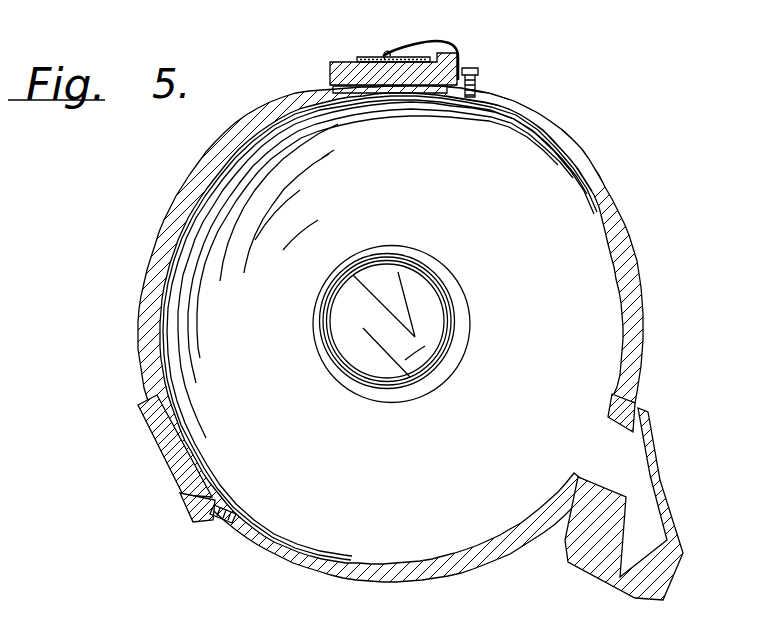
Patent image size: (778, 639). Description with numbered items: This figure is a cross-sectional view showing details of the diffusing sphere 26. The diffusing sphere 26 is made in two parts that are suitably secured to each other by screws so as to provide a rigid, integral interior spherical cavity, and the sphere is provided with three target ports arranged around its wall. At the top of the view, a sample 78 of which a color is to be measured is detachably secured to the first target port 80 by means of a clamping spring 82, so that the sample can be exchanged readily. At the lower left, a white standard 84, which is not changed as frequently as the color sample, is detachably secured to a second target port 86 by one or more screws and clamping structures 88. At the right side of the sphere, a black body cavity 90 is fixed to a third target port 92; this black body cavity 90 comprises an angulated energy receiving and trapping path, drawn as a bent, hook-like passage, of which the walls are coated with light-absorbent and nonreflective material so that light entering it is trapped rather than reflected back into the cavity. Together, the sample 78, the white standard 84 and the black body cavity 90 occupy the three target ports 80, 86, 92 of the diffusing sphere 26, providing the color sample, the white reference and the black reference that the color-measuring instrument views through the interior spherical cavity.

The diffusing sphere 26 is at (579, 132).
The sample 78 is at (368, 60).
The first target port 80 is at (391, 87).
The clamping spring 82 is at (440, 47).
The white standard 84 is at (165, 457).
The second target port 86 is at (193, 467).
The screws and clamping structures 88 is at (197, 517).
The black body cavity 90 is at (592, 563).
The third target port 92 is at (607, 453).